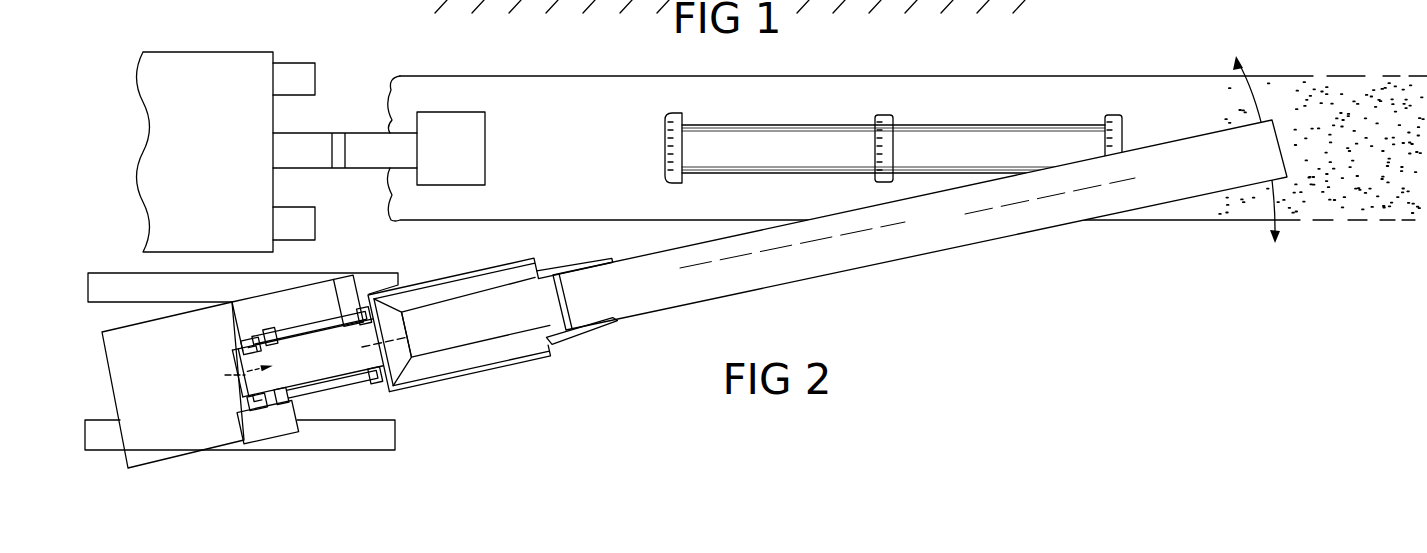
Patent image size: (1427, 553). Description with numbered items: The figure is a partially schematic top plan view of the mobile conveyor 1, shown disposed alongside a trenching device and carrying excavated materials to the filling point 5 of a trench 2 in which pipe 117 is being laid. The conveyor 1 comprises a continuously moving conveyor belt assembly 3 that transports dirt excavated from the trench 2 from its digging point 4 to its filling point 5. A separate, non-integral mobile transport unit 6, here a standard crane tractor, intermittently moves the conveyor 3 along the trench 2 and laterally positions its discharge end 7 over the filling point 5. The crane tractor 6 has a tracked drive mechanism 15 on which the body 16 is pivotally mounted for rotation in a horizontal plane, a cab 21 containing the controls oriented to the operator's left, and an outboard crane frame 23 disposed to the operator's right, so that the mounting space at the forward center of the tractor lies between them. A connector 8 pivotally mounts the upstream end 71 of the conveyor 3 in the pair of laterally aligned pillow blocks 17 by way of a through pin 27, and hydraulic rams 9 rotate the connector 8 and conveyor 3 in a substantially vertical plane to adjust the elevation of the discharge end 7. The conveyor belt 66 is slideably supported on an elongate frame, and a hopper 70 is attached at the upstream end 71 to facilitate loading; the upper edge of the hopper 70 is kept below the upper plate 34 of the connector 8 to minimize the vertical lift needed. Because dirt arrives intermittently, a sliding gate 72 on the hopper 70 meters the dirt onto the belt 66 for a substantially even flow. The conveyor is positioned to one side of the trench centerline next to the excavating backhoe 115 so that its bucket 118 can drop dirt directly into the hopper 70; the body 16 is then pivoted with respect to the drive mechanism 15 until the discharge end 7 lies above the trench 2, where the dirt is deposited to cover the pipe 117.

The mobile conveyor 1 is at (481, 387).
The trench 2 is at (856, 84).
The conveyor belt assembly 3 is at (739, 301).
The digging point 4 is at (448, 93).
The filling point 5 is at (1303, 117).
The mobile transport unit 6 is at (210, 459).
The discharge end 7 is at (1193, 153).
The connector 8 is at (227, 381).
The rams 9 is at (326, 334).
The tracked drive mechanism 15 is at (341, 437).
The body 16 is at (231, 301).
The pillow blocks 17 is at (245, 345).
The cab 21 is at (324, 291).
The outboard crane frame 23 is at (254, 431).
The through pin 27 is at (235, 355).
The upper plate 34 is at (389, 342).
The conveyor belt 66 is at (912, 236).
The hopper 70 is at (518, 350).
The upstream end 71 is at (438, 343).
The sliding gate 72 is at (574, 296).
The backhoe 115 is at (212, 68).
The pipe 117 is at (736, 143).
The backhoe bucket 118 is at (476, 155).